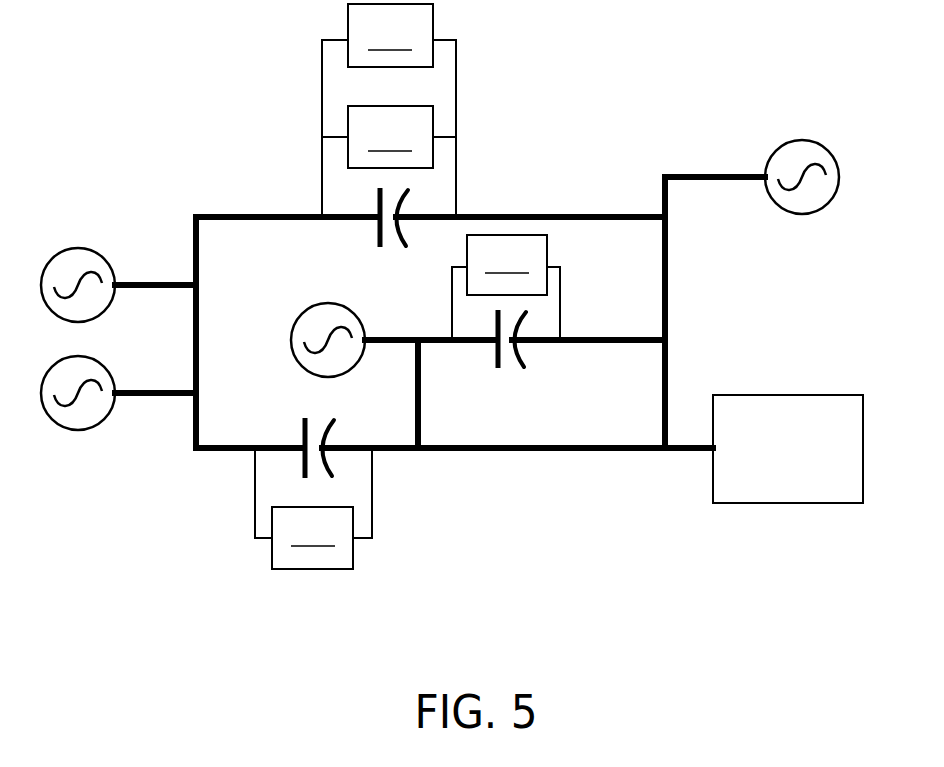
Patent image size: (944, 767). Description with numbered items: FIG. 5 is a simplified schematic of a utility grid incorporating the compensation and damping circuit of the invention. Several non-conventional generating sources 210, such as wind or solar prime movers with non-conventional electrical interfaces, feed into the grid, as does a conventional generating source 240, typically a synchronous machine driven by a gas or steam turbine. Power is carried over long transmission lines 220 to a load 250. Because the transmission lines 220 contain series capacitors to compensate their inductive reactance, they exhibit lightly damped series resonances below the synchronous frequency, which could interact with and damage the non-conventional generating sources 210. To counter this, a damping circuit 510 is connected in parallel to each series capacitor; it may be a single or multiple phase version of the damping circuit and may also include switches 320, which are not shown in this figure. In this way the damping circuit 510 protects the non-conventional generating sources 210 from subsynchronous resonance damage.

The non-conventional generating sources 210 is at (115, 305).
The transmission lines 220 is at (580, 452).
The conventional generating sources 240 is at (773, 147).
The loads 250 is at (768, 458).
The switches 320 is at (320, 69).
The damping circuit 510 is at (407, 286).